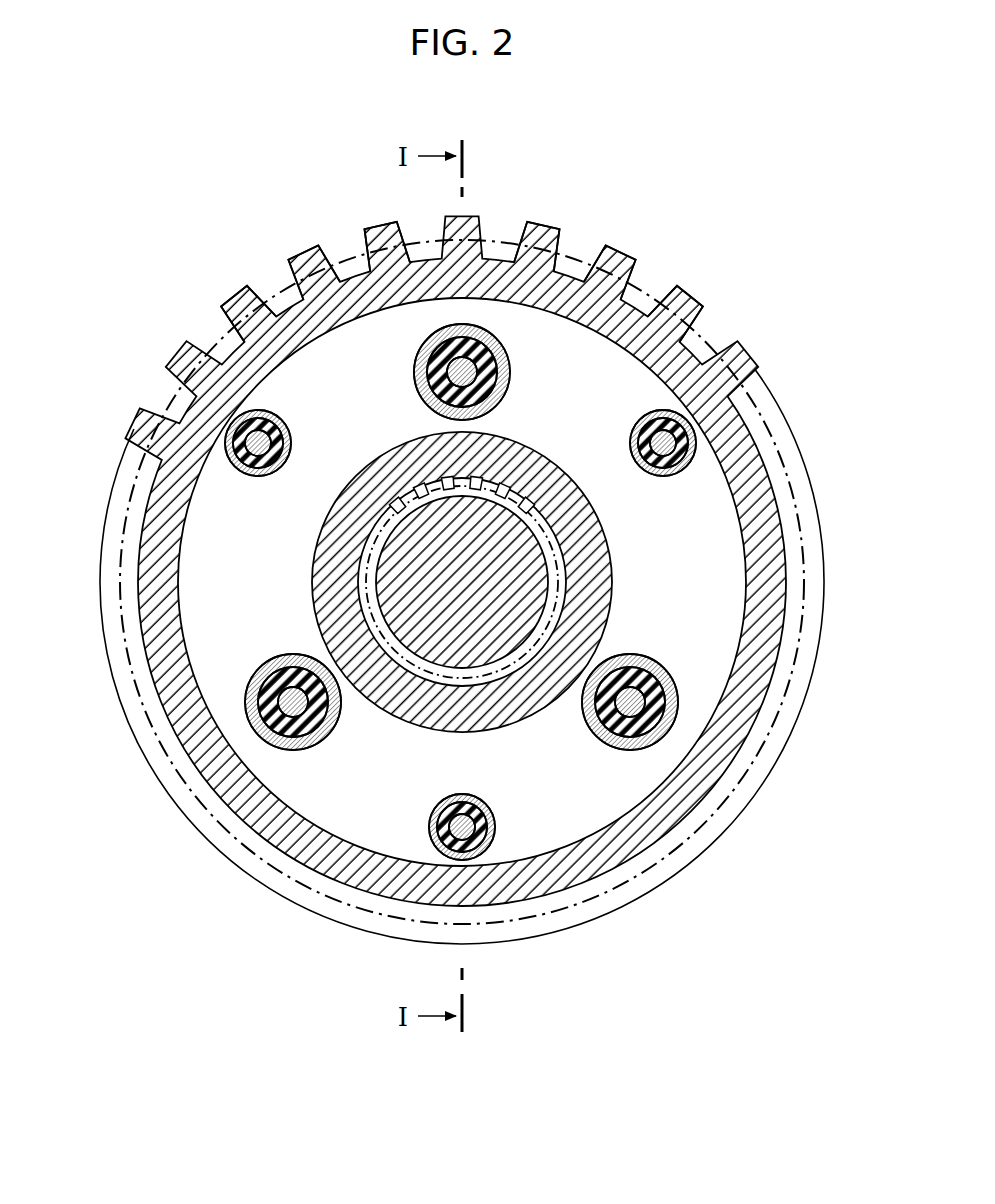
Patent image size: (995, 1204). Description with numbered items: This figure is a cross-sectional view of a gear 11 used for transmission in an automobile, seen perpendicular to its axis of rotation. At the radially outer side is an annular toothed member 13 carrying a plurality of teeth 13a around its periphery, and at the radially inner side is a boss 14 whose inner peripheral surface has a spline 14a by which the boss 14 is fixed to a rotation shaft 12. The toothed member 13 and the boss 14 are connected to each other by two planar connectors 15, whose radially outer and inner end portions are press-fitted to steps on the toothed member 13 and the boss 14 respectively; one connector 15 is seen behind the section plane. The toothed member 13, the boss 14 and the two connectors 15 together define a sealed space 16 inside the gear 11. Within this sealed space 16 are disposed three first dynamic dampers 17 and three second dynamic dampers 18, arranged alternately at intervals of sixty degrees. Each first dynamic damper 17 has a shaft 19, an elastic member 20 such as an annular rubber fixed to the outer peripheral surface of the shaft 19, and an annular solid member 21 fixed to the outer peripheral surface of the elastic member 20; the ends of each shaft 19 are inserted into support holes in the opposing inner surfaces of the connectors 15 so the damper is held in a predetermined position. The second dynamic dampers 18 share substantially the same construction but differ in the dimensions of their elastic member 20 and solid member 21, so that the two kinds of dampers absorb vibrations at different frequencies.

The gear 11 is at (735, 311).
The rotation shaft 12 is at (450, 591).
The annular toothed member 13 is at (176, 346).
The teeth 13a is at (377, 237).
The boss 14 is at (386, 452).
The spline 14a is at (500, 490).
The planar connector 15 is at (723, 553).
The sealed space 16 is at (238, 575).
The first dynamic damper 17 is at (514, 377).
The second dynamic damper 18 is at (274, 402).
The shaft 19 is at (452, 360).
The elastic member 20 is at (480, 346).
The annular solid member 21 is at (416, 372).